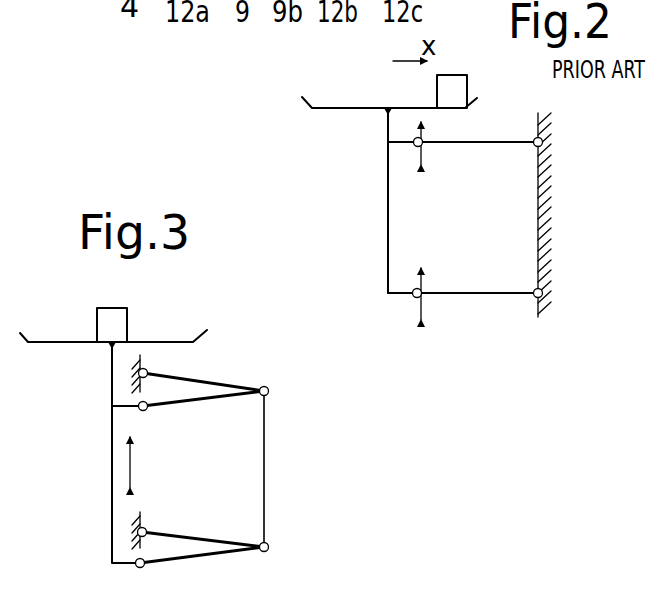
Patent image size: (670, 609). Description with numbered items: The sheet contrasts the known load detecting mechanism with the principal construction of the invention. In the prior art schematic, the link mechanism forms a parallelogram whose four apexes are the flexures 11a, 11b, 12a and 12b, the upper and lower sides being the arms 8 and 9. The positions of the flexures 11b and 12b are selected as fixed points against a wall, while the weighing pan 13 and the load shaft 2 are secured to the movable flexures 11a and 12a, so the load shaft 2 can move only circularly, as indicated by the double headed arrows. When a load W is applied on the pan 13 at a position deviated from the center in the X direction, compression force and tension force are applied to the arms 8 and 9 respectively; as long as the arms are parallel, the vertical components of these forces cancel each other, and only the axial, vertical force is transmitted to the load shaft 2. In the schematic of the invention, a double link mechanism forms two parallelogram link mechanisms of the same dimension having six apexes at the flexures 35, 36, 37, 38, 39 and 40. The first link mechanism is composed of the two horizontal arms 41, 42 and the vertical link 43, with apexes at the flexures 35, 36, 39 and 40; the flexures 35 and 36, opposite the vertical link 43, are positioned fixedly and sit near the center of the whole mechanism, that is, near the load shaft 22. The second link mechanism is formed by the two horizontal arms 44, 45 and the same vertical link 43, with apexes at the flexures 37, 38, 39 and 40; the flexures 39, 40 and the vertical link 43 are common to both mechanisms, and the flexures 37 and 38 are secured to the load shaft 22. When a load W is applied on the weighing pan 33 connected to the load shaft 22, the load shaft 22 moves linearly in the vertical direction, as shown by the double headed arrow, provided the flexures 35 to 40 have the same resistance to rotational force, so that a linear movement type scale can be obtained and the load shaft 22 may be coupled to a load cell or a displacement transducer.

In FIG. 2, the load W is at (457, 85).
In FIG. 3, the load W is at (118, 317).
In FIG. 2, the pan 13 is at (332, 110).
In FIG. 2, the load shaft 2 is at (388, 224).
In FIG. 2, the arm 8 is at (509, 141).
In FIG. 2, the arm 9 is at (492, 295).
In FIG. 2, the flexure 11a is at (413, 147).
In FIG. 2, the flexure 11b is at (545, 142).
In FIG. 2, the flexure 12a is at (413, 297).
In FIG. 2, the flexure 12b is at (545, 294).
In FIG. 3, the weighing pan 33 is at (63, 340).
In FIG. 3, the load shaft 22 is at (110, 518).
In FIG. 3, the flexure 35 is at (148, 370).
In FIG. 3, the flexure 36 is at (150, 530).
In FIG. 3, the flexure 37 is at (148, 410).
In FIG. 3, the flexure 38 is at (148, 565).
In FIG. 3, the flexure 39 is at (270, 391).
In FIG. 3, the flexure 40 is at (270, 547).
In FIG. 3, the horizontal arm 41 is at (233, 382).
In FIG. 3, the horizontal arm 42 is at (215, 540).
In FIG. 3, the vertical link 43 is at (266, 472).
In FIG. 3, the horizontal arm 44 is at (217, 397).
In FIG. 3, the horizontal arm 45 is at (222, 553).